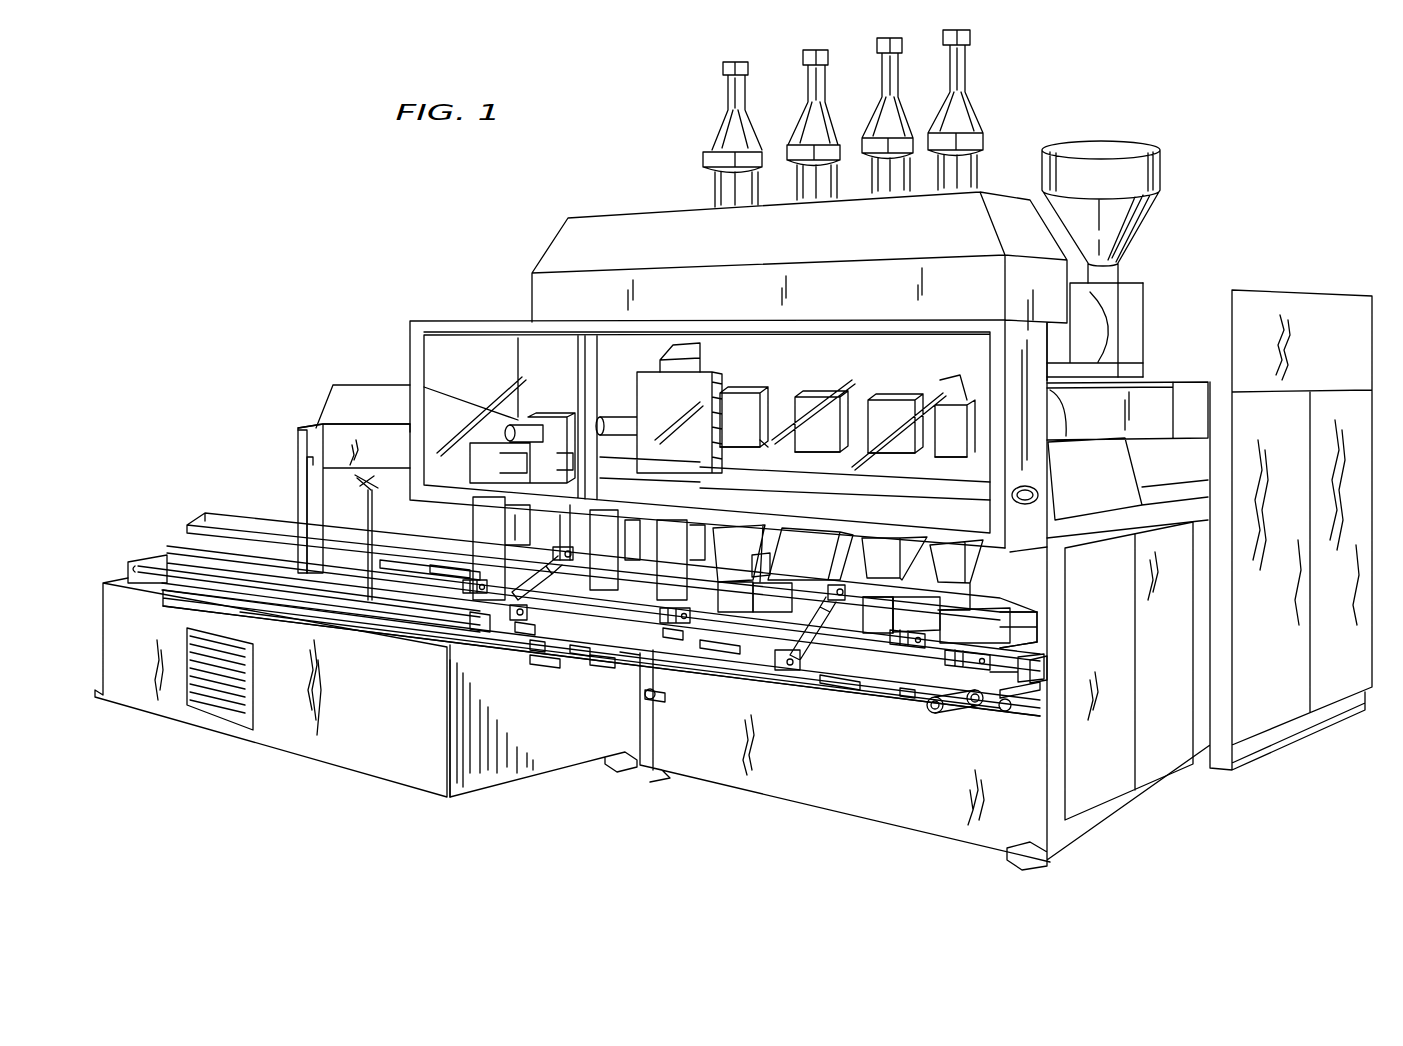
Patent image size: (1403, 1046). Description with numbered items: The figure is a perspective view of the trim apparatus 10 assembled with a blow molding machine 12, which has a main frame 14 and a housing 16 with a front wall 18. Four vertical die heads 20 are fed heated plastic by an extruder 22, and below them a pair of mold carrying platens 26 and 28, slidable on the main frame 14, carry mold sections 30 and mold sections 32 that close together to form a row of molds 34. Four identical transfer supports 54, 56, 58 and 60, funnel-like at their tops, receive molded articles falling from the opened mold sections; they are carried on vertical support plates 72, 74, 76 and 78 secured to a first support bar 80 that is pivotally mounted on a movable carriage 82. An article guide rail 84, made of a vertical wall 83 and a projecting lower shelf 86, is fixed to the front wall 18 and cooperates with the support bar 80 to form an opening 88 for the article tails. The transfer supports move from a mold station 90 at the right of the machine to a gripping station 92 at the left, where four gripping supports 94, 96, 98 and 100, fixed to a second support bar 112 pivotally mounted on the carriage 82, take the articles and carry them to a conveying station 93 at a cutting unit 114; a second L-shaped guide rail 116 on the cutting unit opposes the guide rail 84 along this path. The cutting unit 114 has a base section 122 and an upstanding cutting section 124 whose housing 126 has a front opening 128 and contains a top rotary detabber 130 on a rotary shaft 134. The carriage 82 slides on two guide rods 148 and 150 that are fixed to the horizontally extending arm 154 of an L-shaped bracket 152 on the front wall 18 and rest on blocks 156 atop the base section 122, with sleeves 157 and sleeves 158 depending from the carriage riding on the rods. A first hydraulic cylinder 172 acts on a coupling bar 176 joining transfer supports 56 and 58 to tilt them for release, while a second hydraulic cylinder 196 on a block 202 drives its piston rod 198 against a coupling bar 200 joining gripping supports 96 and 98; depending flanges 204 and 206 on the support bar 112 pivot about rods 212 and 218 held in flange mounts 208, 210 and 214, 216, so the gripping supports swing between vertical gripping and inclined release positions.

The trim apparatus 10 is at (848, 675).
The blow molding machine 12 is at (1224, 256).
The main frame 14 is at (1133, 308).
The housing 16 is at (1085, 778).
The front wall 18 is at (930, 815).
The vertical die heads 20 is at (742, 122).
The extruder 22 is at (1088, 303).
The mold carrying platen 26 is at (650, 383).
The mold carrying platen 28 is at (663, 353).
The mold sections 30 is at (747, 437).
The mold sections 32 is at (757, 387).
The molds 34 is at (768, 445).
The transfer support 54 is at (958, 570).
The transfer support 56 is at (866, 577).
The transfer support 58 is at (790, 565).
The transfer support 60 is at (752, 558).
The support plate 72 is at (950, 627).
The support plate 74 is at (885, 612).
The support plate 76 is at (825, 600).
The support plate 78 is at (740, 600).
The first support bar 80 is at (908, 645).
The carriage 82 is at (722, 650).
The vertical wall 83 is at (1032, 613).
The article guide rail 84 is at (1028, 627).
The lower shelf 86 is at (1030, 640).
The opening 88 is at (1003, 684).
The mold station 90 is at (830, 678).
The gripping station 92 is at (535, 648).
The conveying station 93 is at (326, 538).
The gripping support 94 is at (703, 542).
The gripping support 96 is at (605, 529).
The gripping support 98 is at (545, 521).
The gripping support 100 is at (495, 519).
The second support bar 112 is at (573, 632).
The cutting unit 114 is at (297, 470).
The second L-shaped guide rail 116 is at (600, 660).
The base section 122 is at (368, 757).
The cutting section 124 is at (318, 423).
The housing 126 is at (303, 445).
The front opening 128 is at (310, 492).
The top rotary detabber 130 is at (378, 480).
The rotary shaft 134 is at (374, 518).
The guide rod 148 is at (930, 712).
The guide rod 150 is at (982, 695).
The L-shaped bracket 152 is at (1035, 678).
The horizontally extending arm 154 is at (1040, 722).
The blocks 156 is at (203, 572).
The sleeves 157 is at (373, 622).
The sleeves 158 is at (960, 706).
The first hydraulic cylinder 172 is at (802, 673).
The coupling bar 176 is at (877, 602).
The second hydraulic cylinder 196 is at (522, 630).
The piston rod 198 is at (518, 582).
The coupling bar 200 is at (640, 592).
The block 202 is at (537, 647).
The first depending flange 204 is at (653, 697).
The second depending flange 206 is at (472, 594).
The flange mount 208 is at (578, 650).
The flange mount 210 is at (673, 636).
The rod 212 is at (672, 618).
The flange mount 214 is at (447, 582).
The flange mount 216 is at (477, 632).
The rod 218 is at (413, 560).